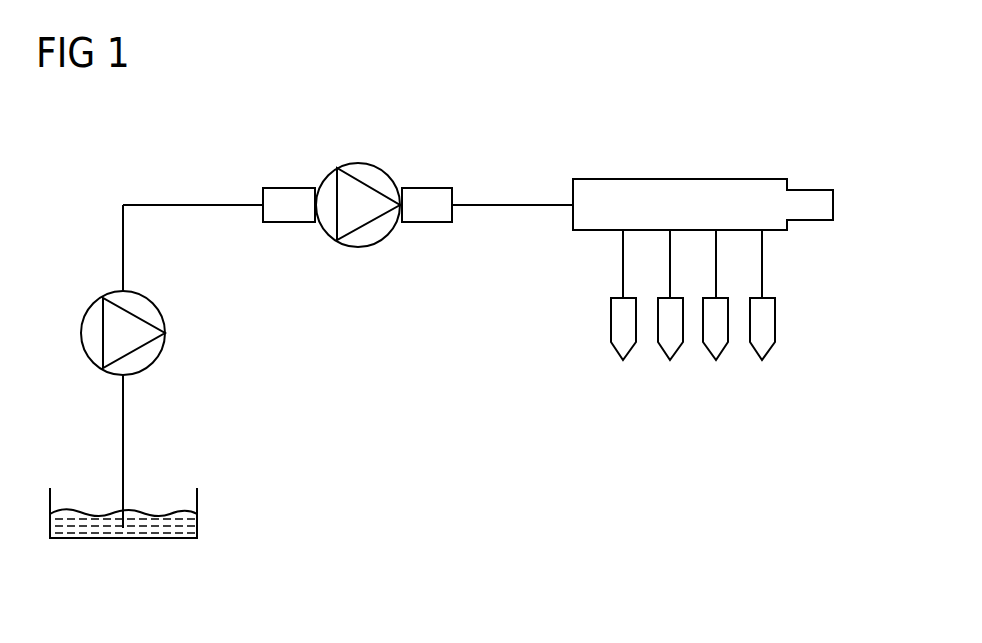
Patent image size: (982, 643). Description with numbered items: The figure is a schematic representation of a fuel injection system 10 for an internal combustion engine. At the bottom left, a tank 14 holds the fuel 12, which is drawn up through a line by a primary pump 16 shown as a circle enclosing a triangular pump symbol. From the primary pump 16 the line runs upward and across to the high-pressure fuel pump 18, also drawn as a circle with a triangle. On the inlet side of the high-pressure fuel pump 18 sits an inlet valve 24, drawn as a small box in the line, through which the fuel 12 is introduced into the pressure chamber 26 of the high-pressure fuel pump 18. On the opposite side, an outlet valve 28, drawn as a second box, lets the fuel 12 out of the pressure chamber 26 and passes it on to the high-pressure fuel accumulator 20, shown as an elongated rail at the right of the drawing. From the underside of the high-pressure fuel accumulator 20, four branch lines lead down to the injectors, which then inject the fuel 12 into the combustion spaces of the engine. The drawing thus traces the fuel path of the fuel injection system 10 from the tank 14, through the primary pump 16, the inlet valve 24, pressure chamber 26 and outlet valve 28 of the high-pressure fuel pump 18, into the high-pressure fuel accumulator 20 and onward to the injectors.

The fuel injection system 10 is at (758, 130).
The fuel 12 is at (153, 530).
The tank 14 is at (197, 498).
The primary pump 16 is at (155, 363).
The high-pressure fuel pump 18 is at (360, 172).
The high-pressure fuel accumulator 20 is at (680, 179).
The inlet valve 24 is at (284, 188).
The pressure chamber 26 is at (357, 232).
The outlet valve 28 is at (430, 188).